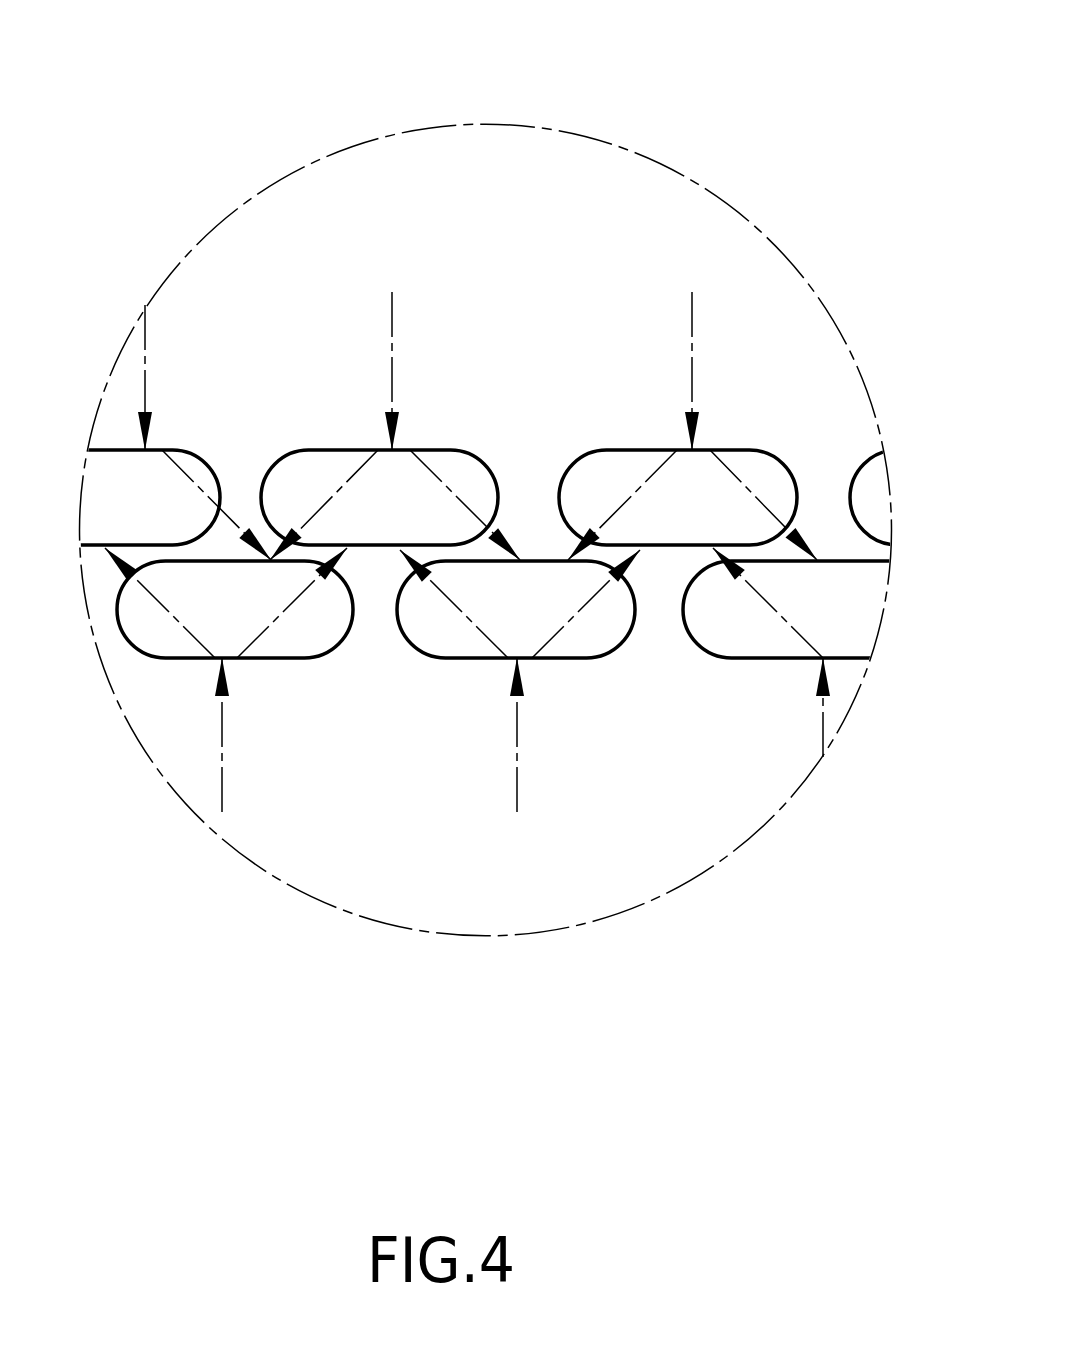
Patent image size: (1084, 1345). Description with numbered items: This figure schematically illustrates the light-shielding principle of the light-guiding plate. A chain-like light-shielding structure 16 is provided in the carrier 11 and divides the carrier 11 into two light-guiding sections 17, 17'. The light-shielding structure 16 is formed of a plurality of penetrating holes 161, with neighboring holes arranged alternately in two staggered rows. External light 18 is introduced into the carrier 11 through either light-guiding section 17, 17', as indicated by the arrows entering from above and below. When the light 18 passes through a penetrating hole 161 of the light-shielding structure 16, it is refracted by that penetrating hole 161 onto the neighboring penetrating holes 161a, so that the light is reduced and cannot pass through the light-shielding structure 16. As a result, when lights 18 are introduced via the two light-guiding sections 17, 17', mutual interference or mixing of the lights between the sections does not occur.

The carrier 11 is at (541, 353).
The chain-like light-shielding structure 16 is at (743, 660).
The penetrating hole 161 is at (765, 477).
The neighboring penetrating hole 161a is at (603, 625).
The light-guiding section 17 is at (486, 267).
The light-guiding section 17' is at (486, 802).
The external light 18 is at (692, 347).